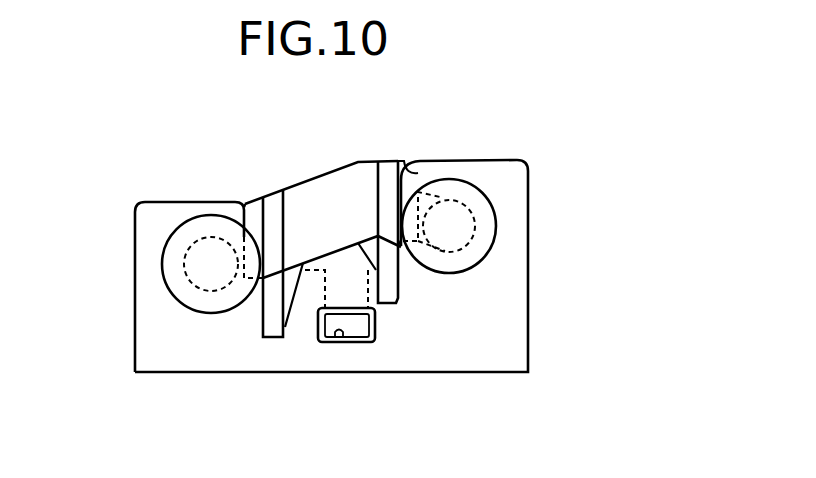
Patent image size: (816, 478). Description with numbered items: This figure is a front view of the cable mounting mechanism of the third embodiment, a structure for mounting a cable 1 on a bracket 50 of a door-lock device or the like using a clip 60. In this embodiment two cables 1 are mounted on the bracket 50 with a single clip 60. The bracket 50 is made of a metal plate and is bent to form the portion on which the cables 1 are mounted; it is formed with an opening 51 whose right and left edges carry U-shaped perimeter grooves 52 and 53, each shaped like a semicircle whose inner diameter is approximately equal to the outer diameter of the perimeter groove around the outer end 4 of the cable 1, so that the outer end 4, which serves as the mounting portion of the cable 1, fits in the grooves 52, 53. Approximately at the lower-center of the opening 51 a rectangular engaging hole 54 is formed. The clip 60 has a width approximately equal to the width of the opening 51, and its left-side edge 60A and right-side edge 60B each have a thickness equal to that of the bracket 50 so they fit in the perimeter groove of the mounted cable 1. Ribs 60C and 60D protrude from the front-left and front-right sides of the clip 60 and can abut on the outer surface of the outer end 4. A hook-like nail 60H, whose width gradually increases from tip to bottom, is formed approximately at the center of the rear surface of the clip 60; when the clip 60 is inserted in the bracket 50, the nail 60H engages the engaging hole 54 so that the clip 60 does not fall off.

The cable 1 is at (323, 243).
The outer end 4 is at (163, 270).
The bracket 50 is at (538, 319).
The opening 51 is at (414, 176).
The perimeter groove 52 is at (200, 283).
The perimeter groove 53 is at (457, 237).
The engaging hole 54 is at (350, 366).
The clip 60 is at (359, 256).
The left-side edge 60A is at (257, 208).
The right-side edge 60B is at (420, 180).
The rib 60C is at (277, 328).
The rib 60D is at (395, 305).
The nail 60H is at (360, 328).